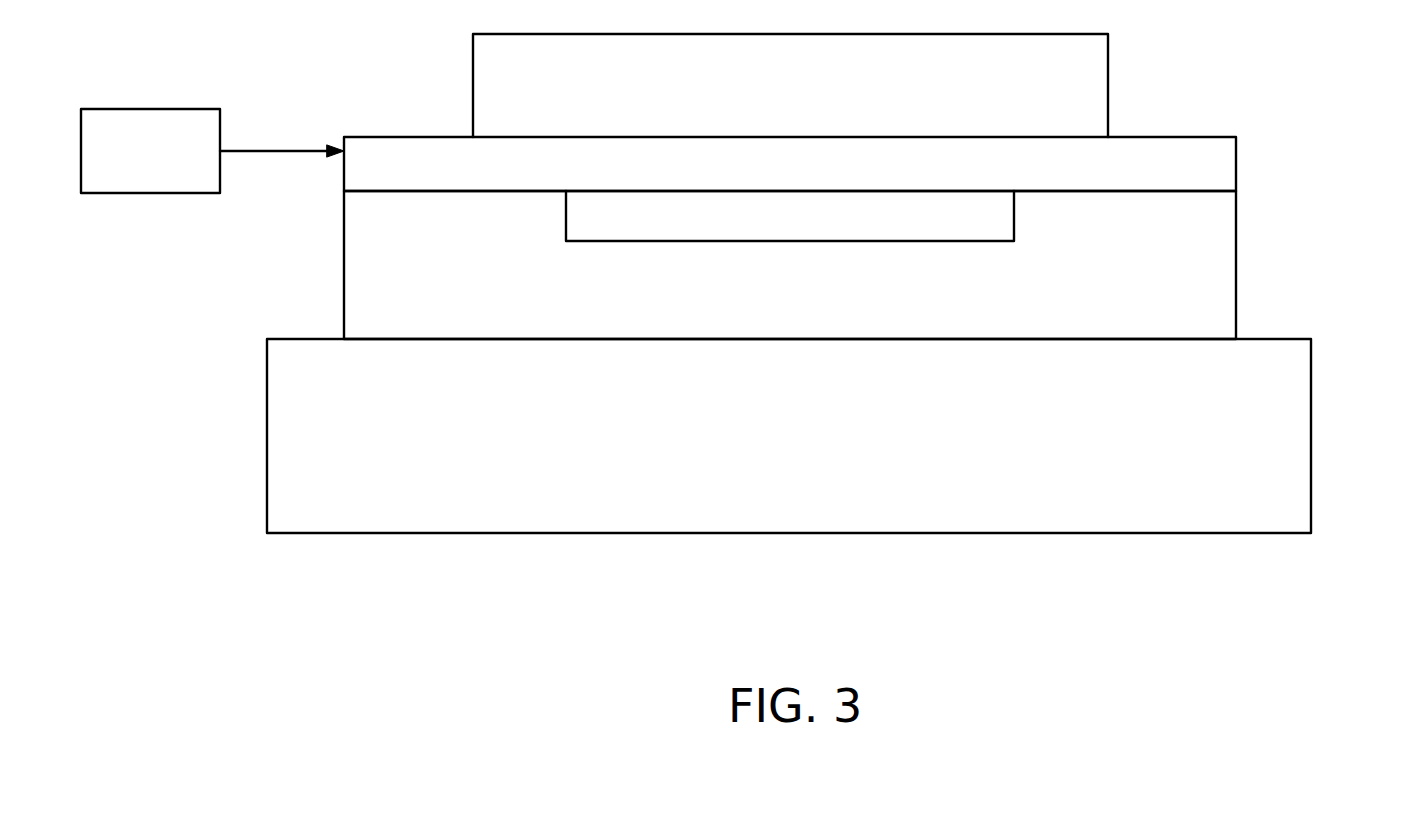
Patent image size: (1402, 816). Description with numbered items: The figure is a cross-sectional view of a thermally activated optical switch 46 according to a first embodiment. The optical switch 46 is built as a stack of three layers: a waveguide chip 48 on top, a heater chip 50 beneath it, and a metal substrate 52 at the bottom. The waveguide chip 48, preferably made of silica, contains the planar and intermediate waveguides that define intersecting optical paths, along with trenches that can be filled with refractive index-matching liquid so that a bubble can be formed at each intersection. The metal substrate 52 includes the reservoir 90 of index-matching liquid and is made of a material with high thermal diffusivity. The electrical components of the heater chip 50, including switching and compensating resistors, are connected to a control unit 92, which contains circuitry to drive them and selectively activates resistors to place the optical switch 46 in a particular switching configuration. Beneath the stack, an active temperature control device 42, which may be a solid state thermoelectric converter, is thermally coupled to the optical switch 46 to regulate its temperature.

The active temperature control device 42 is at (267, 451).
The thermally activated optical switch 46 is at (1307, 32).
The waveguide chip 48 is at (473, 94).
The heater chip 50 is at (347, 177).
The metal substrate 52 is at (343, 245).
The reservoir 90 is at (1005, 220).
The control unit 92 is at (165, 109).